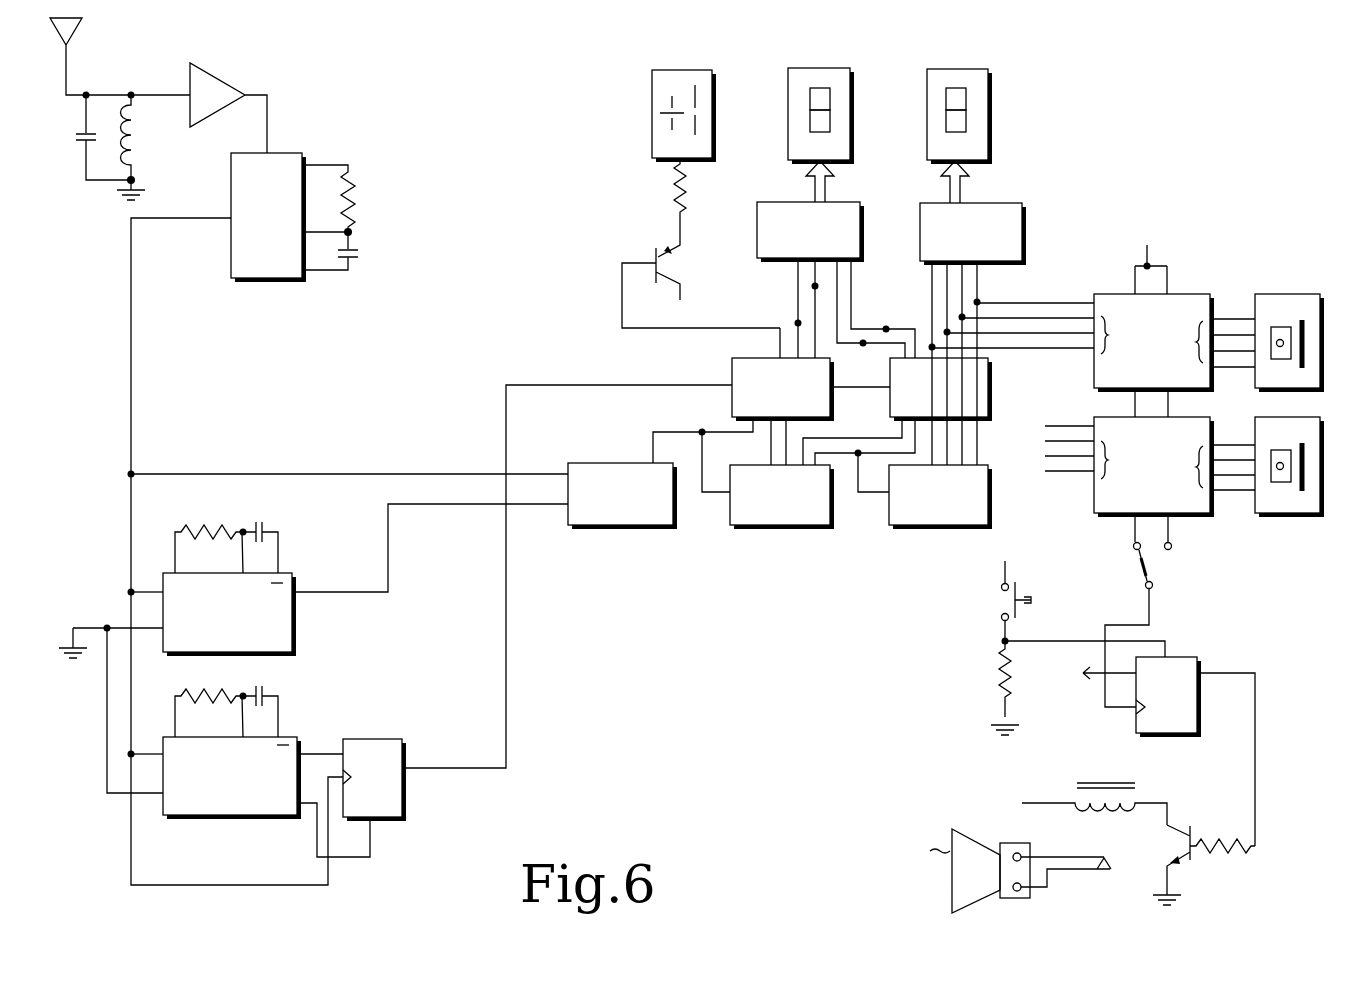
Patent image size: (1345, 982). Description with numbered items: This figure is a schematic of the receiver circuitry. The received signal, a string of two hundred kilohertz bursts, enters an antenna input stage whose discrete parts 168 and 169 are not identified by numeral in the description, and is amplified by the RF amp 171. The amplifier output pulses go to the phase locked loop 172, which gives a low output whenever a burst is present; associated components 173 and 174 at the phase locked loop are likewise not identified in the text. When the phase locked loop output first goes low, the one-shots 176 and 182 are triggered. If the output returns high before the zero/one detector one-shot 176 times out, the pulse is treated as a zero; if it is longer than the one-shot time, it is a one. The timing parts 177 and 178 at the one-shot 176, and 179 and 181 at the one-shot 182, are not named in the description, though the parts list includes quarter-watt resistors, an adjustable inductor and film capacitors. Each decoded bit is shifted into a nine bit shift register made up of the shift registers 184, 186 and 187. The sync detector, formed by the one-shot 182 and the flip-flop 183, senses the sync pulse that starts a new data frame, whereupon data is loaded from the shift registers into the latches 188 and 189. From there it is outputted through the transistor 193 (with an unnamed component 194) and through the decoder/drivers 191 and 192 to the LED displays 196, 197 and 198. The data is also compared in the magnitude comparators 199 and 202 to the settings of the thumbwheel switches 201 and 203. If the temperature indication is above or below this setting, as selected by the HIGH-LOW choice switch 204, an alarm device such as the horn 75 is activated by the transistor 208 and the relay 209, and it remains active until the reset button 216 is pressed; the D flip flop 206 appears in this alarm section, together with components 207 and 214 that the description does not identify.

The capacitor 168 is at (80, 144).
The inductor 169 is at (140, 151).
The RF amp 171 is at (231, 72).
The phase locked loop 172 is at (295, 152).
The resistor 173 is at (354, 213).
The capacitor 174 is at (357, 262).
The zero/one detector one-shot 176 is at (300, 617).
The timing resistor 177 is at (200, 524).
The timing capacitor 178 is at (265, 522).
The timing resistor 179 is at (200, 688).
The timing capacitor 181 is at (281, 687).
The one-shot 182 is at (306, 736).
The flip-flop 183 is at (394, 738).
The shift register 184 is at (652, 527).
The shift register 186 is at (803, 527).
The shift register 187 is at (941, 527).
The latch 188 is at (782, 361).
The latch 189 is at (948, 375).
The decoder/driver 191 is at (809, 210).
The decoder/driver 192 is at (972, 212).
The transistor 193 is at (652, 256).
The resistor 194 is at (686, 190).
The LED display 196 is at (688, 66).
The LED display 197 is at (818, 66).
The LED display 198 is at (956, 66).
The magnitude comparator 199 is at (1196, 293).
The thumbwheel switch 201 is at (1290, 293).
The magnitude comparator 202 is at (1094, 516).
The thumbwheel switch 203 is at (1310, 516).
The HIGH-LOW choice switch 204 is at (1146, 610).
The D flip flop 206 is at (1192, 656).
The resistor 207 is at (1212, 842).
The transistor 208 is at (1186, 846).
The relay 209 is at (1103, 785).
The resistor 214 is at (1000, 677).
The reset button 216 is at (1000, 600).
The horn 75 is at (980, 899).